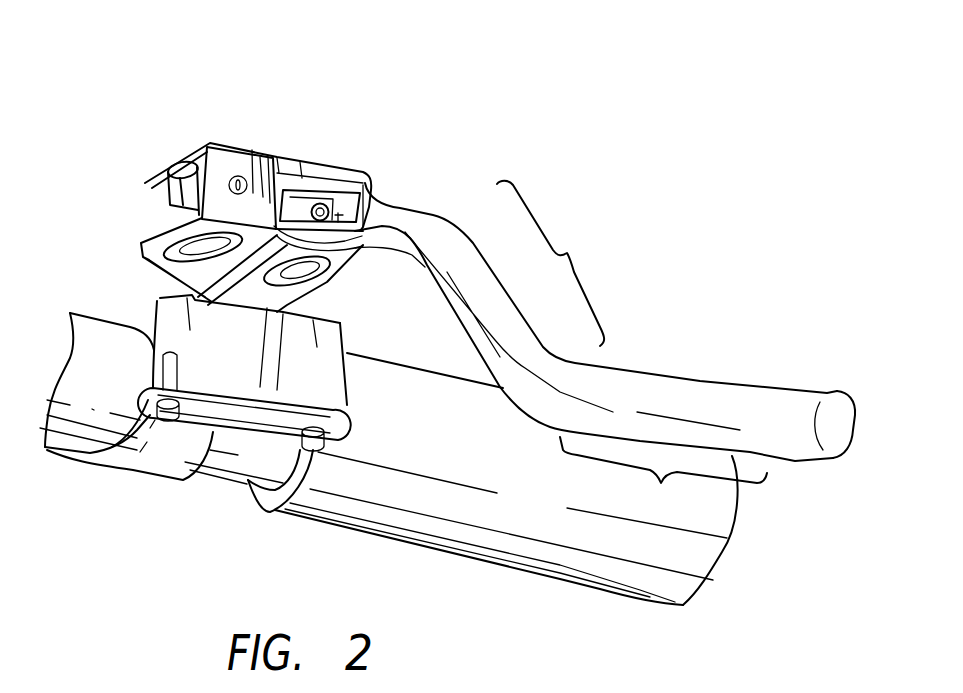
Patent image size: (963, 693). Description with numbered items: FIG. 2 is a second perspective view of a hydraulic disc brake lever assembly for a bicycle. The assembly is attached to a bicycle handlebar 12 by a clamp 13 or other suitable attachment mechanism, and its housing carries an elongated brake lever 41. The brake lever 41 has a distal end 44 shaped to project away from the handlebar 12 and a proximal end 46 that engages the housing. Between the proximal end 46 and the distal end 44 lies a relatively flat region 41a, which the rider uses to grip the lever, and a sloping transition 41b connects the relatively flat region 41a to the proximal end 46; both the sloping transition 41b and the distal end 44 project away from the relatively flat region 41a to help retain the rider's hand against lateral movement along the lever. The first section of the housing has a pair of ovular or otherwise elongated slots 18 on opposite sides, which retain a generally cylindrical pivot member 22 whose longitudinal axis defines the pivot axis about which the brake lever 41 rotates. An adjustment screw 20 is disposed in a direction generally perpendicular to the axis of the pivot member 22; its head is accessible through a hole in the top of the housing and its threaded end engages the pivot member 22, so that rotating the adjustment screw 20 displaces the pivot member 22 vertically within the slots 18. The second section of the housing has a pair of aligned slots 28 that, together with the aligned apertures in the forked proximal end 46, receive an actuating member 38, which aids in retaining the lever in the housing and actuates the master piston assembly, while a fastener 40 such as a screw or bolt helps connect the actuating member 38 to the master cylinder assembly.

The bicycle handlebar 12 is at (505, 463).
The clamp 13 is at (199, 460).
The slots 18 is at (180, 258).
The adjustment screw 20 is at (237, 178).
The pivot member 22 is at (165, 210).
The slots 28 is at (303, 278).
The actuating member 38 is at (297, 202).
The fastener 40 is at (322, 208).
The brake lever 41 is at (688, 378).
The relatively flat region 41a is at (663, 480).
The sloping transition 41b is at (559, 263).
The distal end 44 is at (845, 392).
The proximal end 46 is at (367, 210).